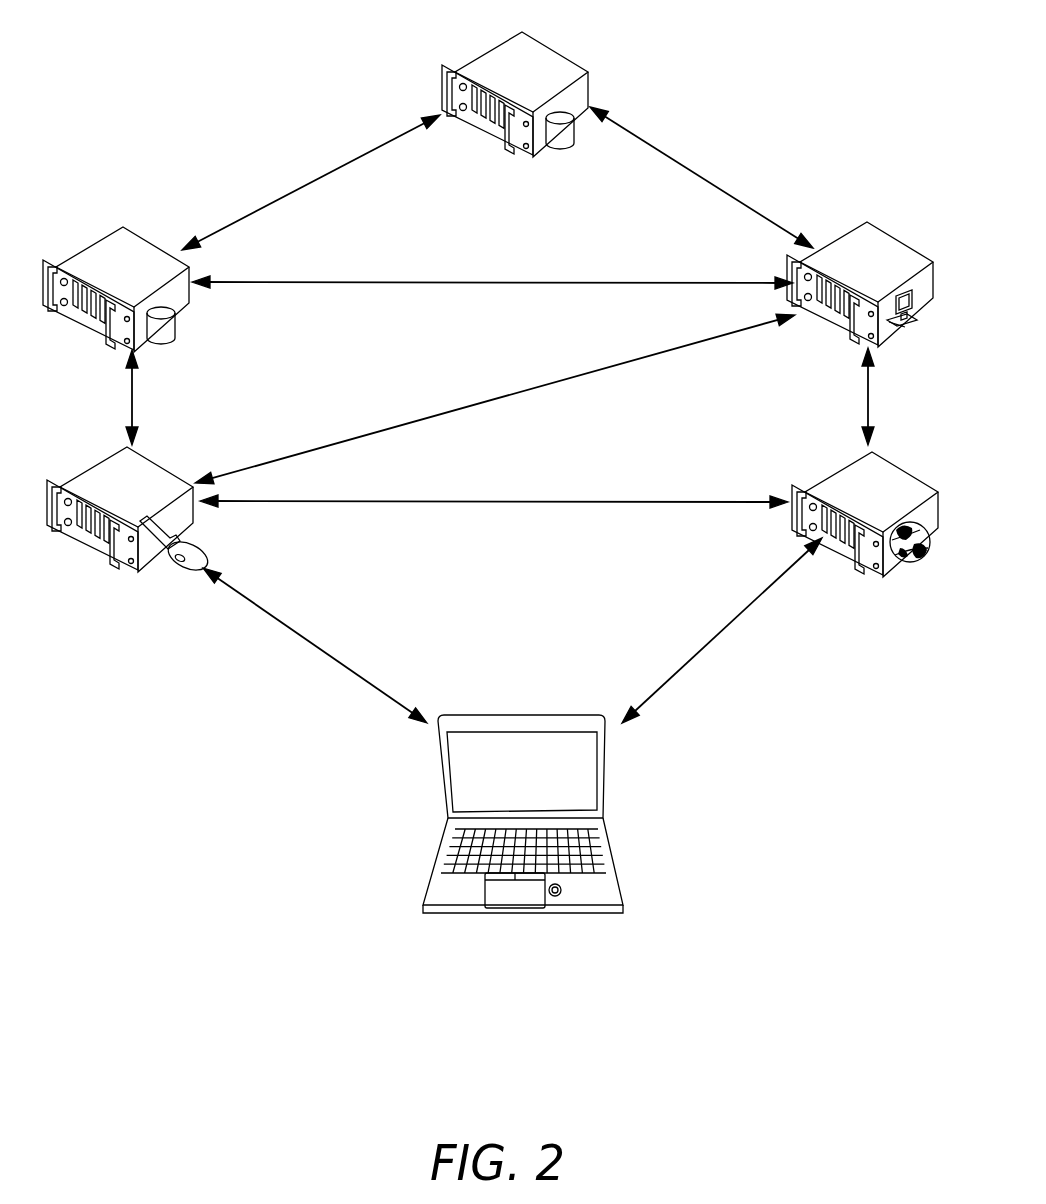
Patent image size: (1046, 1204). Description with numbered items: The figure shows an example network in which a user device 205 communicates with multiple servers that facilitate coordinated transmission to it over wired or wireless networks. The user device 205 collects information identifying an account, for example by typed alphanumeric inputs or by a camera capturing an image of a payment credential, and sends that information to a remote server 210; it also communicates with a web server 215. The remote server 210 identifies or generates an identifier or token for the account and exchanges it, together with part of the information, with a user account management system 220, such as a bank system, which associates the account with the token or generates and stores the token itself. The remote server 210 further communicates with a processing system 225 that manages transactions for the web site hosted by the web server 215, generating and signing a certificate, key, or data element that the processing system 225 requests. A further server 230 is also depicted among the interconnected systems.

The user device 205 is at (605, 760).
The remote server 210 is at (146, 459).
The web server 215 is at (890, 463).
The user account management system 220 is at (143, 238).
The processing system 225 is at (885, 233).
The storage server 230 is at (553, 52).